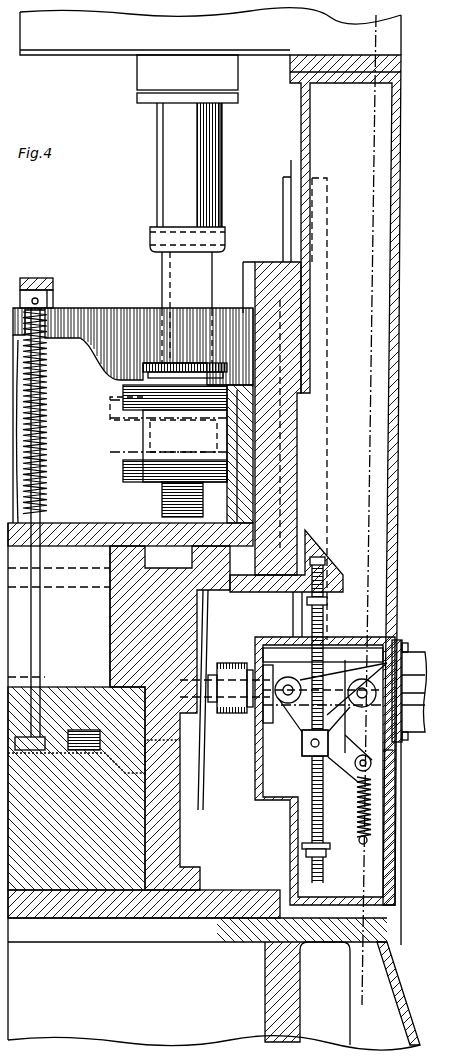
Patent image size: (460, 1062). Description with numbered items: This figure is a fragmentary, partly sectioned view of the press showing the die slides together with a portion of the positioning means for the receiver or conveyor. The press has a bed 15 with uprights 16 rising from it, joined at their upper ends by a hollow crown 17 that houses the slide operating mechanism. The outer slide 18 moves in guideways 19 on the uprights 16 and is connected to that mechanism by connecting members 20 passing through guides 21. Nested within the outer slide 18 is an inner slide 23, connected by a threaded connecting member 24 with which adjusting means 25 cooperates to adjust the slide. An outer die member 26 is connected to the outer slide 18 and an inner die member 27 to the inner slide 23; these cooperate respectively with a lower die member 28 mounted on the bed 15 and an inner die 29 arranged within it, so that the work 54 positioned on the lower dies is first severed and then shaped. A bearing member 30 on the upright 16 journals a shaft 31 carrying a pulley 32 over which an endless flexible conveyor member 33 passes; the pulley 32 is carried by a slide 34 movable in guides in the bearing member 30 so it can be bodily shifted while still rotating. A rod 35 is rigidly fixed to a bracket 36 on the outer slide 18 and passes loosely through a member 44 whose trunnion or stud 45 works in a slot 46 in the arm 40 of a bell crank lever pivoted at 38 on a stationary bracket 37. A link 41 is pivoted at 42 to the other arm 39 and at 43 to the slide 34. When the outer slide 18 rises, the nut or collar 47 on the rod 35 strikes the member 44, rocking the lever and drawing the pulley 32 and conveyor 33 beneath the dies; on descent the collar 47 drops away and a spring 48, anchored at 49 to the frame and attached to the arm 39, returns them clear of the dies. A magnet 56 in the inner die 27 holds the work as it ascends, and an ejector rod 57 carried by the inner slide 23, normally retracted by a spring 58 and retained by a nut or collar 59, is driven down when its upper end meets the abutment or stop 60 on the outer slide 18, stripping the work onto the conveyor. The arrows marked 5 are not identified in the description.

The section line 5 is at (352, 33).
The bed 15 is at (265, 996).
The uprights 16 is at (396, 173).
The crown 17 is at (86, 45).
The outer slide 18 is at (268, 262).
The guideways 19 is at (304, 387).
The connecting members 20 is at (222, 233).
The guides 21 is at (146, 79).
The inner slide 23 is at (75, 343).
The connecting member 24 is at (206, 170).
The adjusting means 25 is at (150, 364).
The outer die member 26 is at (205, 607).
The inner die member 27 is at (110, 664).
The lower die member 28 is at (190, 840).
The inner die 29 is at (103, 880).
The bearing members 30 is at (325, 758).
The shaft 31 is at (52, 672).
The pulleys 32 is at (233, 710).
The endless flexible conveyor members 33 is at (232, 665).
The slide 34 is at (414, 668).
The rod or bar 35 is at (327, 600).
The bracket 36 is at (333, 575).
The bearing member or bracket 37 is at (383, 677).
The pivot 38 is at (376, 693).
The arm 39 is at (393, 750).
The arm 40 is at (383, 713).
The link 41 is at (323, 693).
The pivot 42 is at (371, 763).
The pivot 43 is at (290, 683).
The member 44 is at (310, 758).
The trunnion or stud 45 is at (304, 750).
The slot 46 is at (350, 765).
The nut or collar 47 is at (326, 849).
The spring 48 is at (371, 815).
The anchor 49 is at (373, 842).
The work 54 is at (107, 754).
The magnet 56 is at (92, 730).
The ejector rods 57 is at (42, 612).
The spring 58 is at (46, 400).
The nut or collar 59 is at (53, 297).
The abutment or stop 60 is at (50, 278).